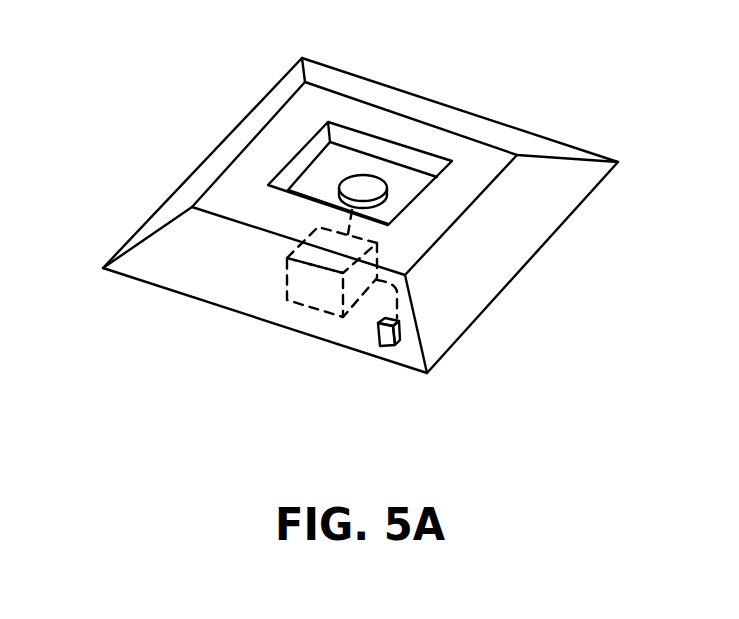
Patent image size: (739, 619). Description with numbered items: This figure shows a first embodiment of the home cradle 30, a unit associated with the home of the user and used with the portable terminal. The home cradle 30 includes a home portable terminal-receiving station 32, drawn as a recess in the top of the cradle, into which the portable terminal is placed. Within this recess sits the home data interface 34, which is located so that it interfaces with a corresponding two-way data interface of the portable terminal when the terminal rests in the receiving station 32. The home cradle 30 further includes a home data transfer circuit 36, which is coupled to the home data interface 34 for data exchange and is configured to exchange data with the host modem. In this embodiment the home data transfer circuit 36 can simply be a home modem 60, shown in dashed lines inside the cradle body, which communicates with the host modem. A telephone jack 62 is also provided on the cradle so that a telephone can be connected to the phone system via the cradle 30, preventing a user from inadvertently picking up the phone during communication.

The home cradle 30 is at (543, 137).
The home portable terminal-receiving station 32 is at (404, 172).
The home data interface 34 is at (340, 177).
The home data transfer circuit 36 is at (248, 285).
The home modem 60 is at (317, 310).
The telephone jack 62 is at (383, 343).